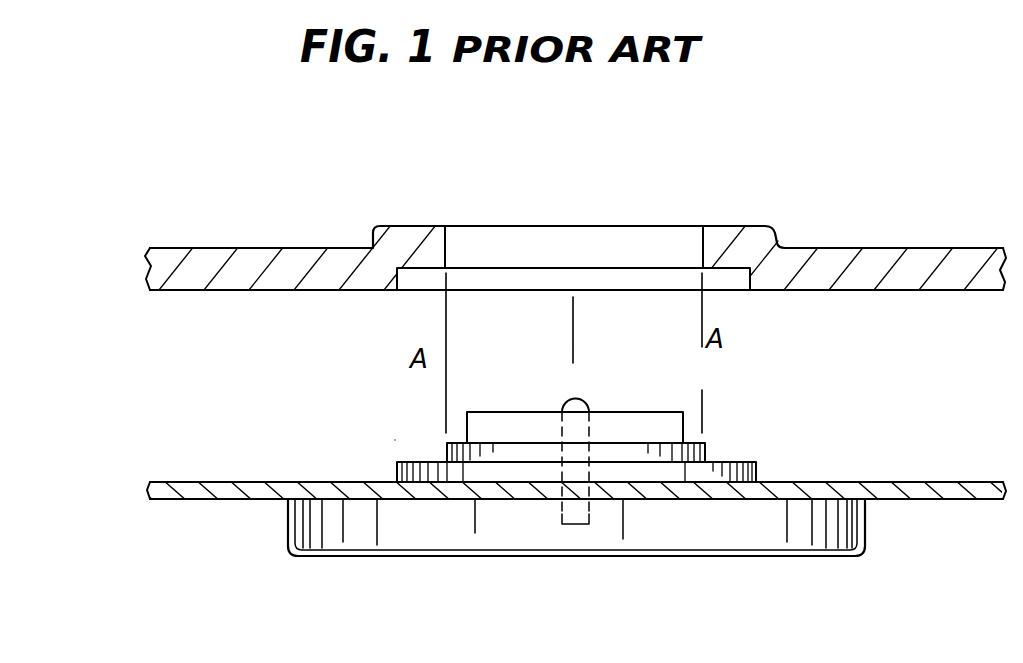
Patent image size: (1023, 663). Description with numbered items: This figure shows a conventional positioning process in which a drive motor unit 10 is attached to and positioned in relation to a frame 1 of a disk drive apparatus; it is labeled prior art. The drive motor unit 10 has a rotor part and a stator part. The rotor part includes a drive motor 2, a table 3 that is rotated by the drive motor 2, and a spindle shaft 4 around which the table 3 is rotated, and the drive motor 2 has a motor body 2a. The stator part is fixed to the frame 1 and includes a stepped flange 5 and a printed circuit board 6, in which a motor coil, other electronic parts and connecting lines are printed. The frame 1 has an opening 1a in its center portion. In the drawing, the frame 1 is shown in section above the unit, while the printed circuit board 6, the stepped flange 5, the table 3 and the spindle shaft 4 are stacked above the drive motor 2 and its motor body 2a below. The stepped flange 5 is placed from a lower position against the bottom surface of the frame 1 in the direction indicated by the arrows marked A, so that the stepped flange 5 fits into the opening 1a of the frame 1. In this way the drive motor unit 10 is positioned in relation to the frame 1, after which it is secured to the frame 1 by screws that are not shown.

The frame 1 is at (894, 240).
The opening 1a is at (447, 245).
The drive motor 2 is at (697, 560).
The motor body 2a is at (838, 556).
The table 3 is at (663, 412).
The spindle shaft 4 is at (580, 399).
The stepped flange 5 is at (707, 448).
The printed circuit board 6 is at (948, 500).
The drive motor unit 10 is at (850, 430).